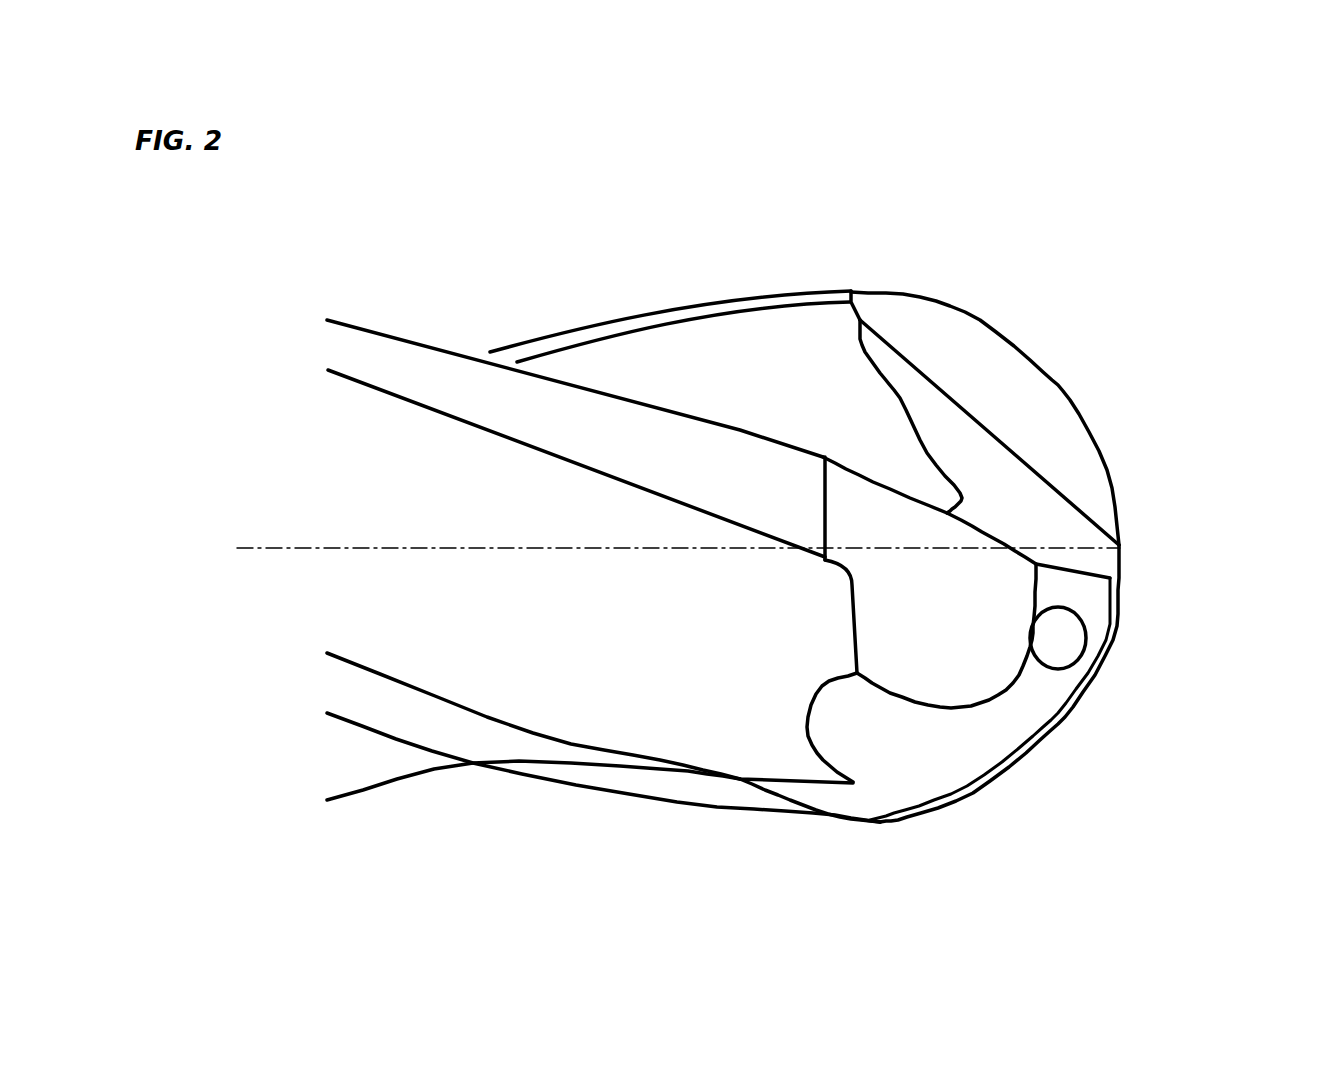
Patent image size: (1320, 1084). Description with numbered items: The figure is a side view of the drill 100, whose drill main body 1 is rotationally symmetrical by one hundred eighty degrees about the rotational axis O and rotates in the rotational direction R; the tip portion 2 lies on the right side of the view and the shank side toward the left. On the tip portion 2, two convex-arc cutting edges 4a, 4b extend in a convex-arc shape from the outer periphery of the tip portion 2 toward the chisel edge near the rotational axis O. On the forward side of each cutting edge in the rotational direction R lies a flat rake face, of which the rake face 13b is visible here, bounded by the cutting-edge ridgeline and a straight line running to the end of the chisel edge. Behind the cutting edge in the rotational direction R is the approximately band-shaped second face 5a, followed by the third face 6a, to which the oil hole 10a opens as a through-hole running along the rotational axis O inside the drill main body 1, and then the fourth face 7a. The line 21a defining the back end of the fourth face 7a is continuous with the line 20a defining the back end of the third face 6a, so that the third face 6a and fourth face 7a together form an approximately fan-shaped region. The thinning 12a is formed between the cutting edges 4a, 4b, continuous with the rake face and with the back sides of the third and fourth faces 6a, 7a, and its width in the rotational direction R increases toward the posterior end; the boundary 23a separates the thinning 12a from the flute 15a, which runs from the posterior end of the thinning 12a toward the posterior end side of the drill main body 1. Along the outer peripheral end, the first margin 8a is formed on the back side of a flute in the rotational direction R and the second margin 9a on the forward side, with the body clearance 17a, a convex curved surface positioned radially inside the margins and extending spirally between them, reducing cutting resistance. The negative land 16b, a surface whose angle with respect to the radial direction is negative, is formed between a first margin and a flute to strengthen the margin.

The drill main body 1 is at (573, 508).
The tip portion 2 is at (989, 326).
The drill 100 is at (1250, 174).
The convex-arc cutting edge 4a is at (990, 790).
The convex-arc cutting edge 4b is at (985, 384).
The second face 5a is at (1073, 703).
The third face 6a is at (897, 757).
The fourth face 7a is at (968, 657).
The first margin 8a is at (472, 730).
The second margin 9a is at (575, 320).
The oil hole 10a is at (1050, 632).
The thinning 12a is at (1093, 420).
The rake face 13b is at (1116, 336).
The flute 15a is at (688, 255).
The negative land 16b is at (670, 267).
The body clearance 17a is at (563, 615).
The line defining back end of third face 20a is at (1077, 568).
The line defining back end of fourth face 21a is at (993, 538).
The boundary 23a is at (911, 357).
The rotational axis O is at (285, 548).
The rotational direction R is at (165, 573).